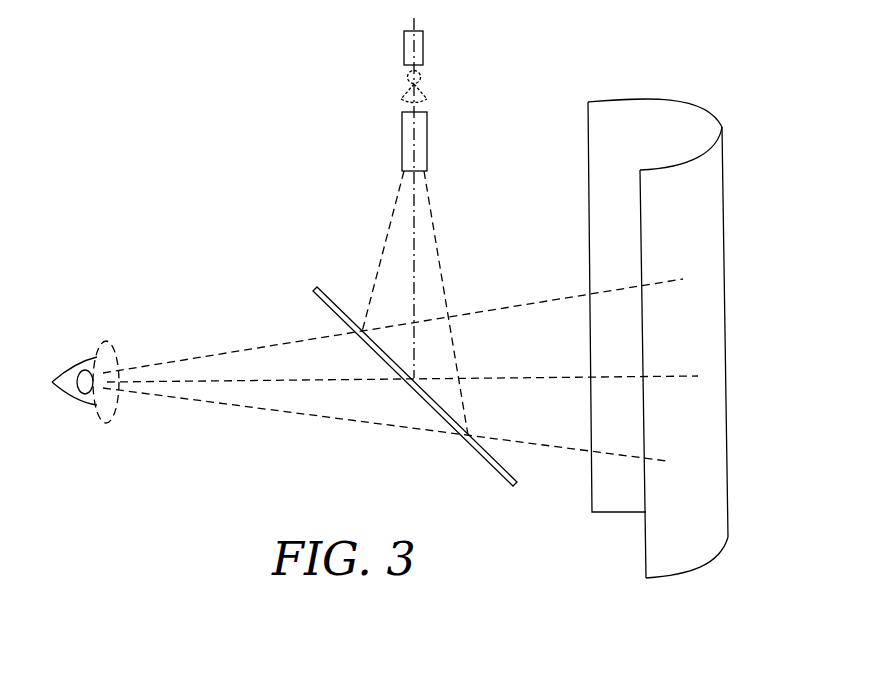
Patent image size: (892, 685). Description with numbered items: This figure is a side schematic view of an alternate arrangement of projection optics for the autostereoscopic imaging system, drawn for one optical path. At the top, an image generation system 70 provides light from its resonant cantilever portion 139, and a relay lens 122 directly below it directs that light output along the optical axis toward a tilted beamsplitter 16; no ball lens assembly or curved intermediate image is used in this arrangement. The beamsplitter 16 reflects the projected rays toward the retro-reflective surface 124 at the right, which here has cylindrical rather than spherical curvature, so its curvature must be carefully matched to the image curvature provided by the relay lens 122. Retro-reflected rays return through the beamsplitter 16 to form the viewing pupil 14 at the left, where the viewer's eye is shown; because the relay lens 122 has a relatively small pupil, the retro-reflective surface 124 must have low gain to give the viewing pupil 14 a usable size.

The viewing pupil 14 is at (112, 417).
The beamsplitter 16 is at (333, 296).
The image generation system 70 is at (453, 80).
The relay lens 122 is at (427, 132).
The retro-reflective surface 124 is at (725, 362).
The resonant cantilever portion 139 is at (408, 78).